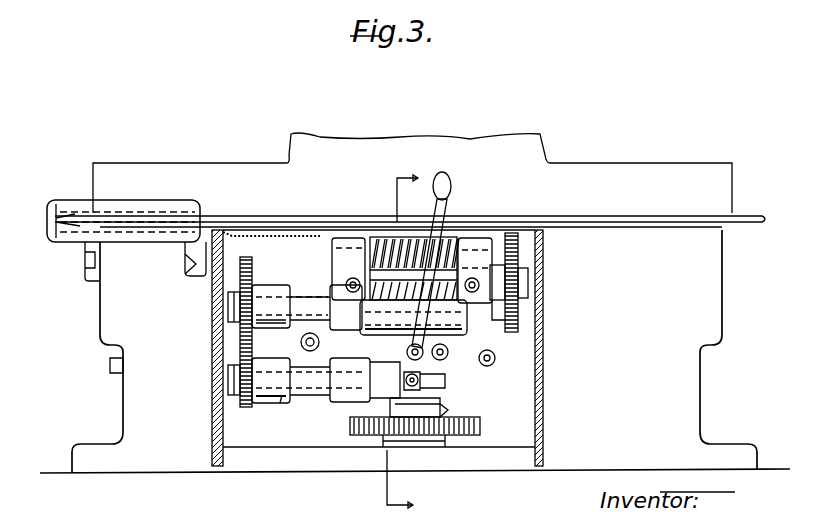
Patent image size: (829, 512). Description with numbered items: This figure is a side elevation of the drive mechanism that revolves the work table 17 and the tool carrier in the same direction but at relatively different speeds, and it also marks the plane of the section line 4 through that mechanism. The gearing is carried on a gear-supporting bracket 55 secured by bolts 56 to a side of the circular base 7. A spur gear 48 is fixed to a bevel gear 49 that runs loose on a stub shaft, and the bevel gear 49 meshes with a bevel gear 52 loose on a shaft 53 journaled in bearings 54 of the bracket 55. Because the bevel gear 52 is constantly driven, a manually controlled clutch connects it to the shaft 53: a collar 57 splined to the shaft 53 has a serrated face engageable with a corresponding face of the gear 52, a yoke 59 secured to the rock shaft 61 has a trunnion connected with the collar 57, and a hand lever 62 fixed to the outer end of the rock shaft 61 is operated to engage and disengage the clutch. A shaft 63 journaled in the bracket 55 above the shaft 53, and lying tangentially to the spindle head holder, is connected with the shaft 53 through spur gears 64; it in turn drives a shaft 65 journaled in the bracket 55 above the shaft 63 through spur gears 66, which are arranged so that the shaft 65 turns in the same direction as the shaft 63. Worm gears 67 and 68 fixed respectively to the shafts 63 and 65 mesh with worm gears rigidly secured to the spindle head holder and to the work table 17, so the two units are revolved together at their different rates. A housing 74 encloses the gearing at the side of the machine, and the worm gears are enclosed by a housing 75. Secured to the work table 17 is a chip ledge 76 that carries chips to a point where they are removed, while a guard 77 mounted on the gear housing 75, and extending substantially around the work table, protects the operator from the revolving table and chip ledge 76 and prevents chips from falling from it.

The section line 4- 4 is at (408, 341).
The circular base 7 is at (655, 392).
The work table 17 is at (640, 197).
The spur gear 48 is at (480, 428).
The bevel gear 49 is at (450, 412).
The bevel gear 52 is at (392, 400).
The shaft 53 is at (313, 386).
The bearings 54 is at (280, 403).
The gear-supporting bracket 55 is at (495, 360).
The bolts 56 is at (311, 332).
The collar 57 is at (440, 390).
The yoke 59 is at (422, 380).
The rock shaft 61 is at (372, 347).
The hand lever 62 is at (452, 188).
The shaft 63 is at (297, 304).
The spur gears 64 is at (236, 353).
The shaft 65 is at (344, 240).
The spur gears 66 is at (521, 266).
The worm gear 67 is at (378, 290).
The worm gear 68 is at (376, 240).
The housing 74 is at (528, 308).
The housing 75 is at (415, 351).
The chip ledge 76 is at (752, 213).
The guard 77 is at (55, 206).